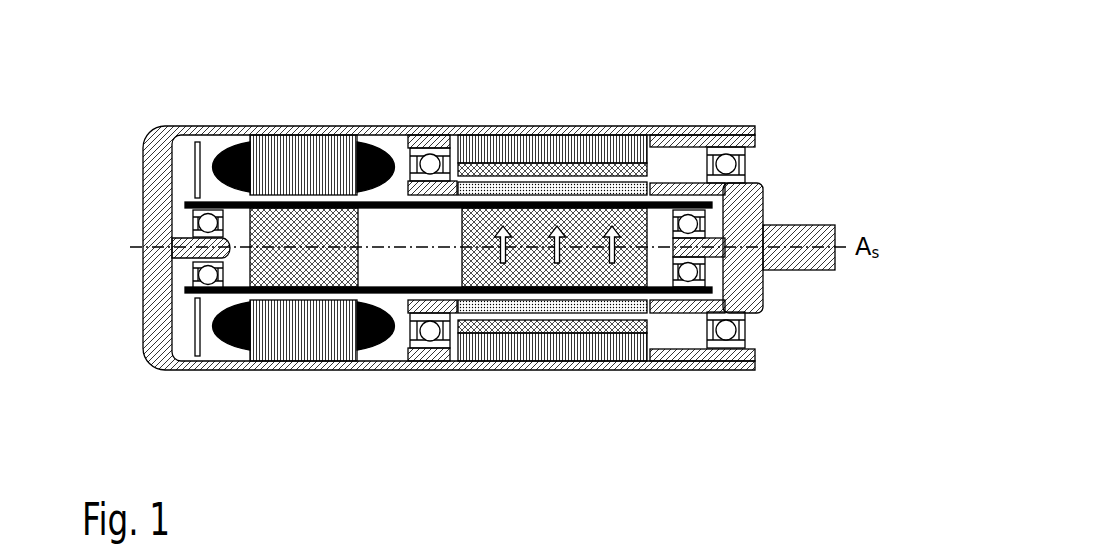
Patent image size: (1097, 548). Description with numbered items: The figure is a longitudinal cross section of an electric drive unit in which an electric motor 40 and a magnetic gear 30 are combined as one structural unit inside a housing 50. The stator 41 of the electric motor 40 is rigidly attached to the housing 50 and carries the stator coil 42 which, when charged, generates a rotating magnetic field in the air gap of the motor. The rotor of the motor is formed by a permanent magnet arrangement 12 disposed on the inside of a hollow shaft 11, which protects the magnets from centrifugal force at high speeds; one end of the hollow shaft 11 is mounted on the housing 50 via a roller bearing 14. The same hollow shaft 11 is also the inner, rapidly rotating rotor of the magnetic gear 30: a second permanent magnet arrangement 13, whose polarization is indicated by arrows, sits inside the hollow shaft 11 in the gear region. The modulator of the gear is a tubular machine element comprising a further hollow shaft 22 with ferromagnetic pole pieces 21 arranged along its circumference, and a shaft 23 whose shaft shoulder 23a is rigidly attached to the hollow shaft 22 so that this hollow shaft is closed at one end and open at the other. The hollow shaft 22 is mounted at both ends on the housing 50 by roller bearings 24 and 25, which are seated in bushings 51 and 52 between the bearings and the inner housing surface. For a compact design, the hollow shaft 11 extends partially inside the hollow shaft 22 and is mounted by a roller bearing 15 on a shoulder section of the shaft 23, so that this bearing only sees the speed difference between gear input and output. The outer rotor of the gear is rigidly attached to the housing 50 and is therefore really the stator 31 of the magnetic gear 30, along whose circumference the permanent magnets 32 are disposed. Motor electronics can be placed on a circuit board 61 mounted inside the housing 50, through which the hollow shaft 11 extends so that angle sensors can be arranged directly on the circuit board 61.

The hollow shaft 11 is at (402, 293).
The permanent magnet arrangement 12 is at (355, 263).
The second permanent magnet arrangement 13 is at (470, 227).
The roller bearing 14 is at (200, 223).
The roller bearing 15 is at (688, 224).
The pole pieces 21 is at (643, 312).
The hollow shaft 22 is at (805, 295).
The shaft 23 is at (832, 225).
The shaft shoulder 23a is at (762, 285).
The roller bearing 24 is at (430, 333).
The roller bearing 25 is at (726, 331).
The magnetic gear 30 is at (639, 240).
The stator 31 is at (605, 130).
The permanent magnets 32 is at (647, 173).
The electric motor 40 is at (271, 223).
The stator 41 is at (323, 135).
The stator coil 42 is at (223, 340).
The housing 50 is at (170, 128).
The bushing 51 is at (440, 132).
The bushing 52 is at (650, 358).
The circuit board 61 is at (195, 332).